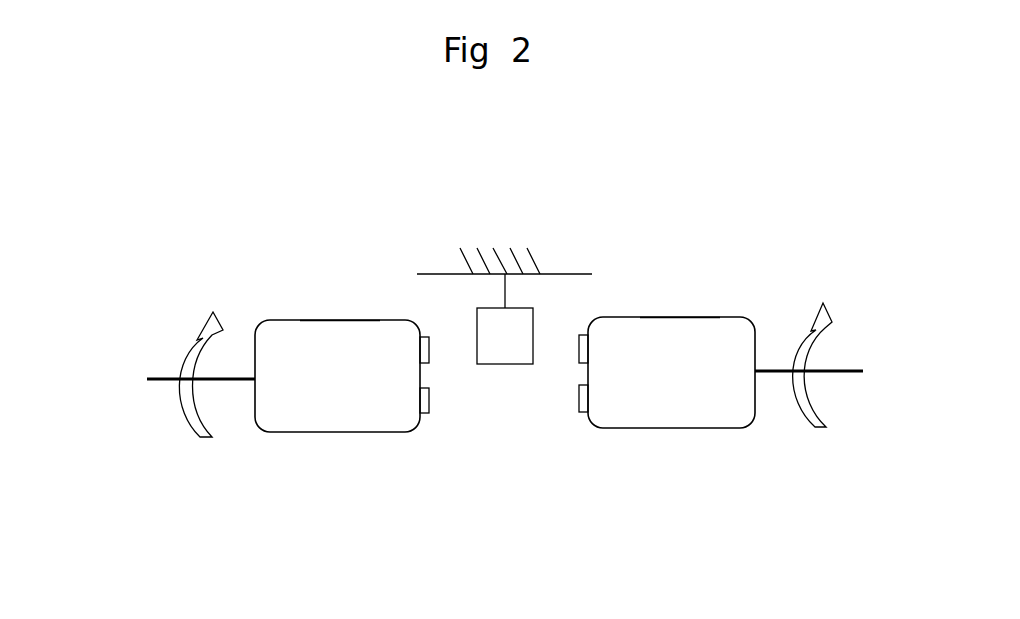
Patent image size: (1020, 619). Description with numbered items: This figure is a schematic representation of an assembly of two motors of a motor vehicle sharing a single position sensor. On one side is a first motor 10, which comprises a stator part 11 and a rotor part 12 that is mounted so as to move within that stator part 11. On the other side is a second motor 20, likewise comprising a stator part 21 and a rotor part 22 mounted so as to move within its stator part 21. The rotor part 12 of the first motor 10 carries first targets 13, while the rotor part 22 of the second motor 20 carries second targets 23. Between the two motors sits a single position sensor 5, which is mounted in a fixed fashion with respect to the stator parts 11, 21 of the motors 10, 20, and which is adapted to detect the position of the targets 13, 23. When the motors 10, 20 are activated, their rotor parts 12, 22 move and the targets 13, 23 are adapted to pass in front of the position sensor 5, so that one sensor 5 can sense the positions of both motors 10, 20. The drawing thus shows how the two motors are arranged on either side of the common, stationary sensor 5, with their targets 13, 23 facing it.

The position sensor 5 is at (510, 388).
The first motor 10 is at (345, 447).
The stator part 11 is at (443, 274).
The rotor part 12 is at (340, 320).
The first targets 13 is at (428, 408).
The second motor 20 is at (667, 444).
The stator part 21 is at (563, 274).
The rotor part 22 is at (672, 317).
The second targets 23 is at (580, 407).